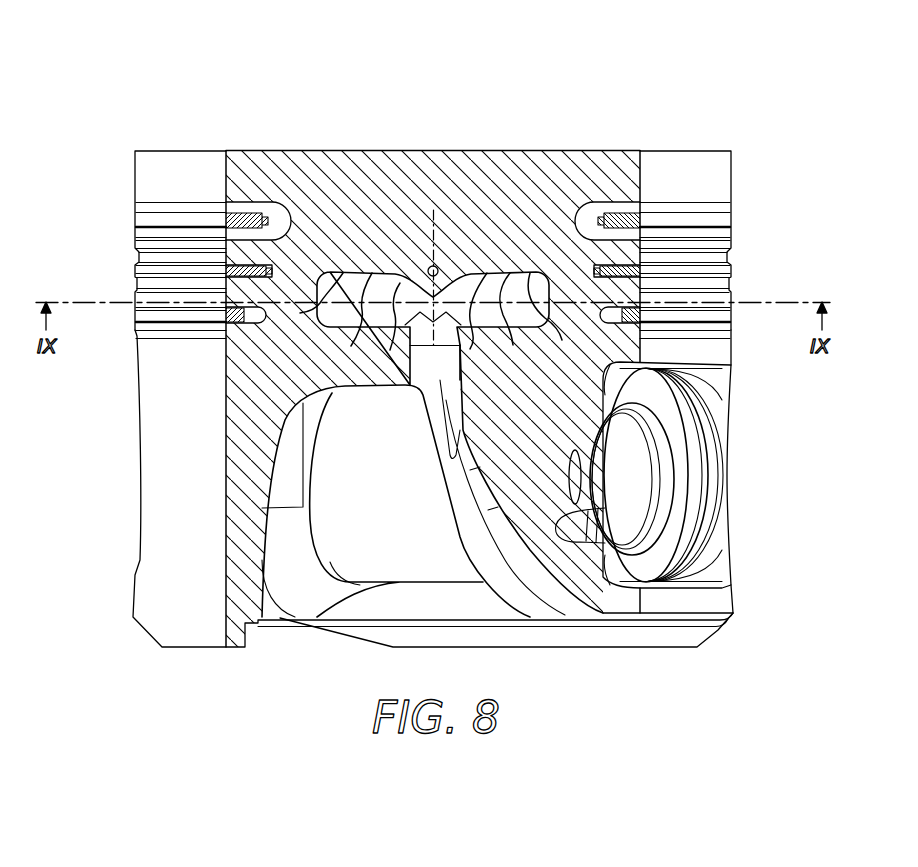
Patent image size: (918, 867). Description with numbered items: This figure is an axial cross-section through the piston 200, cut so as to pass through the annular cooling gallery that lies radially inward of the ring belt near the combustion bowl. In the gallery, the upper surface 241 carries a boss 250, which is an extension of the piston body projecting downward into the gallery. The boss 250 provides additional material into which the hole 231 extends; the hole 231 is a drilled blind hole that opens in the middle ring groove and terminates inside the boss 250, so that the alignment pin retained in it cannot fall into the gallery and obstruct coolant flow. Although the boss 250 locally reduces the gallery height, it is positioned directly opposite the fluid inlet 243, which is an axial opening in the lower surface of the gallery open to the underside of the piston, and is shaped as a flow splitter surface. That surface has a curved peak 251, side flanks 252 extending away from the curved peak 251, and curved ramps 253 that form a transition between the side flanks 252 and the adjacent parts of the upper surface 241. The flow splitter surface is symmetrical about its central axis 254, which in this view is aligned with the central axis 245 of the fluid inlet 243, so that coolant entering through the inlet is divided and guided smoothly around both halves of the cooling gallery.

The piston 200 is at (277, 79).
The hole 231 is at (427, 270).
The upper surface 241 is at (300, 320).
The fluid inlet 243 is at (447, 405).
The central axis of the fluid inlet 245 is at (420, 390).
The boss 250 is at (452, 275).
The curved peak 251 is at (481, 322).
The side flanks 252 is at (452, 323).
The curved ramps 253 is at (452, 320).
The central axis of the flow splitter surface 254 is at (430, 216).